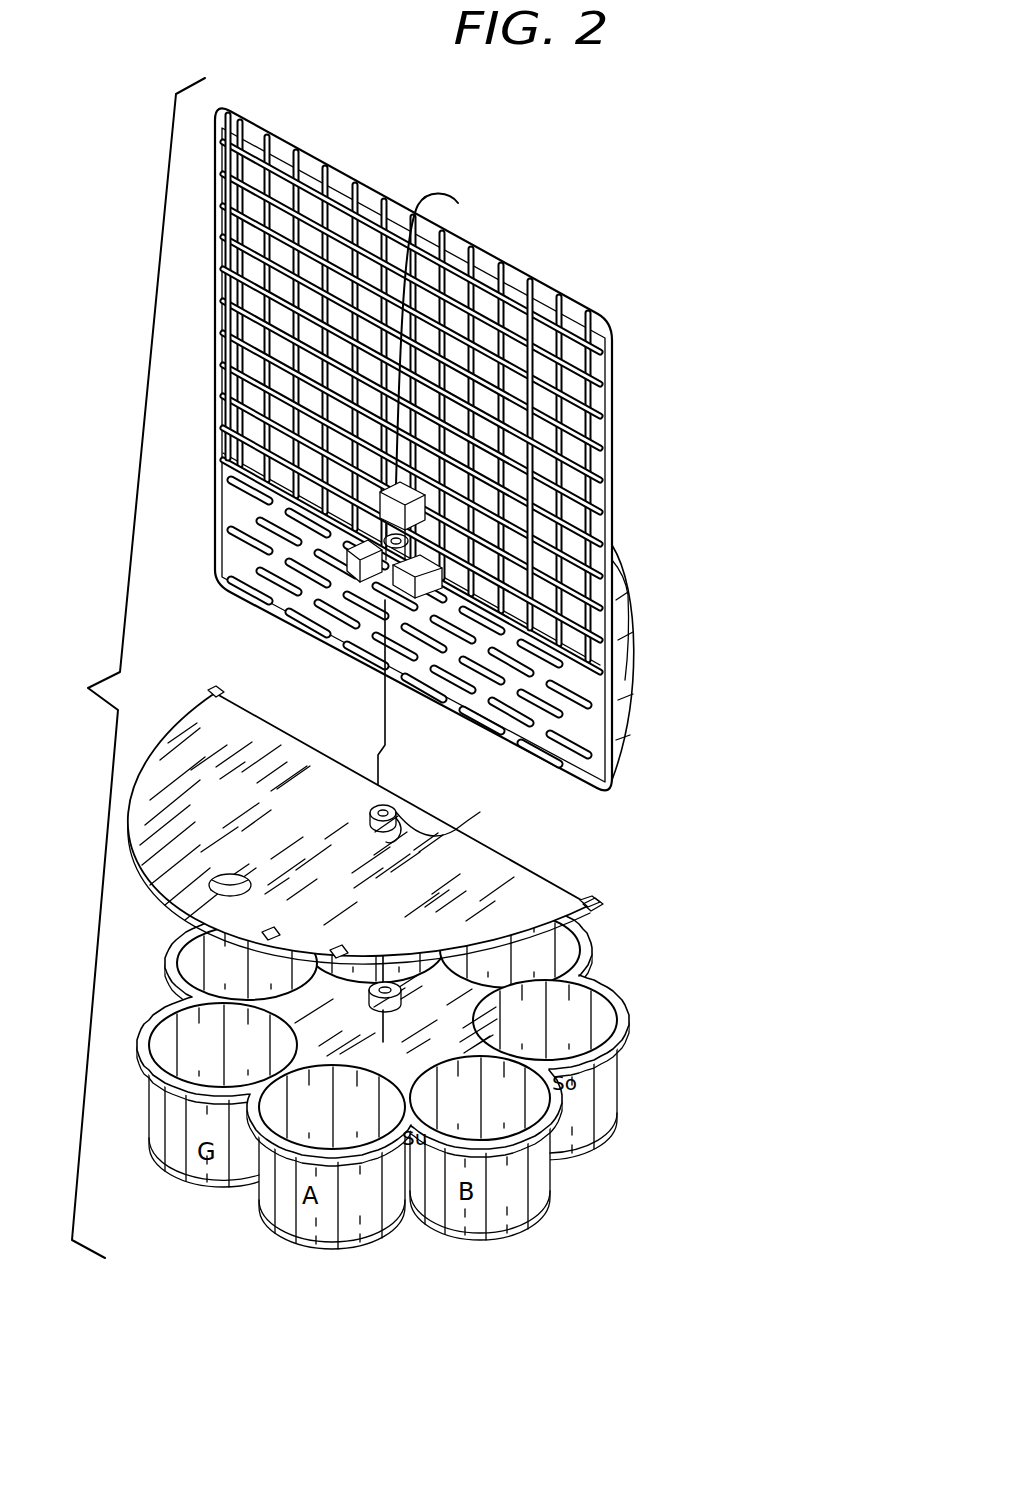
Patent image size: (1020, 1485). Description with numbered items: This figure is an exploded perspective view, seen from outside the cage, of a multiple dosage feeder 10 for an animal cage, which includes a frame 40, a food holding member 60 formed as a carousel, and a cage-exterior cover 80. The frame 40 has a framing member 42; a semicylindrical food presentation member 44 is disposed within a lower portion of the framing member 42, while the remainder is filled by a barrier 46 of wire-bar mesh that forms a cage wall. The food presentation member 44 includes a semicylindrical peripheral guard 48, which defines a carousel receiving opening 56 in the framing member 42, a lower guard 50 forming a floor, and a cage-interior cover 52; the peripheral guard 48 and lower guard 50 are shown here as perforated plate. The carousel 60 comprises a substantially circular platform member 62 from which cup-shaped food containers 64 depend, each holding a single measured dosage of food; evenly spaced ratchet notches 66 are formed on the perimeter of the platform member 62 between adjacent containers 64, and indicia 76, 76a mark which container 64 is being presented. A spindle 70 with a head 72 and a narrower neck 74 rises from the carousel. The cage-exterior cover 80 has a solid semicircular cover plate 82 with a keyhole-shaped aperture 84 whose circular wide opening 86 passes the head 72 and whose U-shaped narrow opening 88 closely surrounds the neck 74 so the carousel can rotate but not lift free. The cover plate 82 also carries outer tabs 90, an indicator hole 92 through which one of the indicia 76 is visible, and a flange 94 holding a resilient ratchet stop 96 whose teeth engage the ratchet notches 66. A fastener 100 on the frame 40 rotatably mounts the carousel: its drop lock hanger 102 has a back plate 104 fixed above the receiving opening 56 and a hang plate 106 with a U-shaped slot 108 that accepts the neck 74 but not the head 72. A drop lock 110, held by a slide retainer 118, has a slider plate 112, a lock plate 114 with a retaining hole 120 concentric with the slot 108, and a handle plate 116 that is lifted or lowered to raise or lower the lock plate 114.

The multiple dosage feeder 10 is at (128, 668).
The frame 40 is at (441, 458).
The framing member 42 is at (612, 402).
The food presentation member 44 is at (640, 595).
The barrier 46 is at (228, 290).
The peripheral guard 48 is at (245, 527).
The lower guard 50 is at (520, 706).
The cage-interior cover 52 is at (630, 575).
The carousel receiving opening 56 is at (232, 493).
The food holding member 60 is at (397, 1120).
The platform member 62 is at (615, 1055).
The food containers 64 is at (200, 950).
The ratchet notches 66 is at (150, 1000).
The spindle 70 is at (372, 998).
The head 72 is at (402, 990).
The neck 74 is at (396, 1024).
The indicia 76 is at (155, 1035).
The cup wall ribs 76a is at (462, 1215).
The cage-exterior cover 80 is at (600, 904).
The cover plate 82 is at (505, 885).
The keyhole-shaped aperture 84 is at (366, 810).
The wide opening 86 is at (390, 838).
The narrow opening 88 is at (455, 828).
The outer tabs 90 is at (213, 692).
The indicator hole 92 is at (240, 880).
The flange 94 is at (332, 950).
The ratchet stop 96 is at (268, 932).
The fastener 100 is at (372, 577).
The drop lock hanger 102 is at (362, 560).
The back plate 104 is at (402, 640).
The hang plate 106 is at (400, 612).
The U-shaped slot 108 is at (395, 600).
The drop lock 110 is at (385, 592).
The slider plate 112 is at (555, 478).
The lock plate 114 is at (238, 413).
The handle plate 116 is at (440, 200).
The slide retainer 118 is at (545, 532).
The retaining hole 120 is at (232, 345).